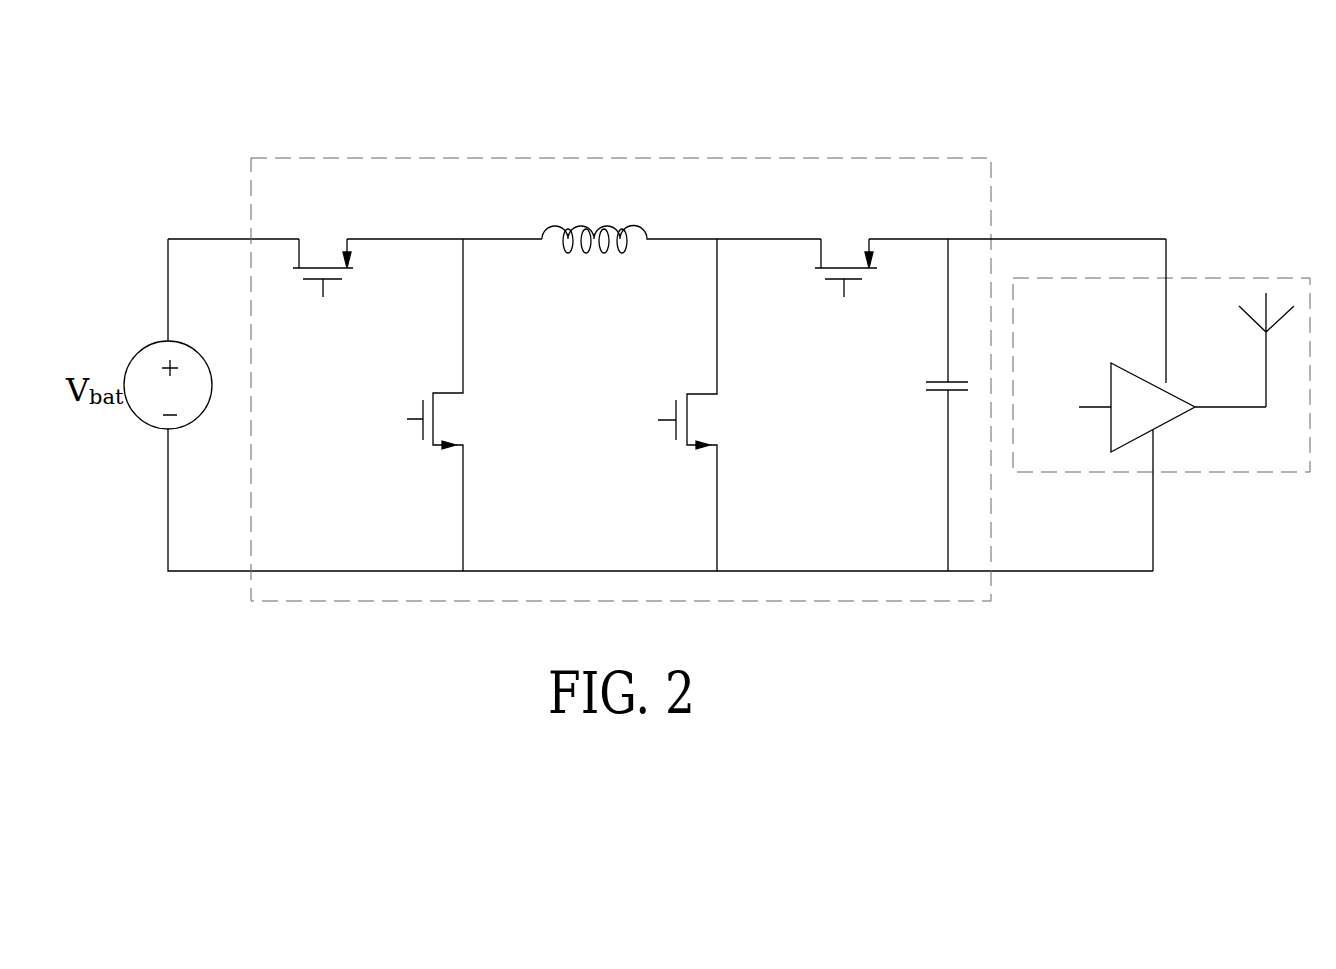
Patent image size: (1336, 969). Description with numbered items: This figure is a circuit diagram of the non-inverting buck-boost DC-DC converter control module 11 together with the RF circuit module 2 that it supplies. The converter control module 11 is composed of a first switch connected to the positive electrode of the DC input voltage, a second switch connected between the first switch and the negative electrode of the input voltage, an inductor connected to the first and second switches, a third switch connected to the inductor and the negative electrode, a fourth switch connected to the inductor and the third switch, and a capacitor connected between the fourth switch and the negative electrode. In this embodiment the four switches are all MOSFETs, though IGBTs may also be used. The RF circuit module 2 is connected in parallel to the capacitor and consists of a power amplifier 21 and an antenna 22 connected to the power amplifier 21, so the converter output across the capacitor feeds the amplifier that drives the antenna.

The non-inverting buck-boost DC-DC converter control module 11 is at (622, 158).
The RF circuit module 2 is at (1161, 370).
The power amplifier 21 is at (1125, 445).
The antenna 22 is at (1280, 305).